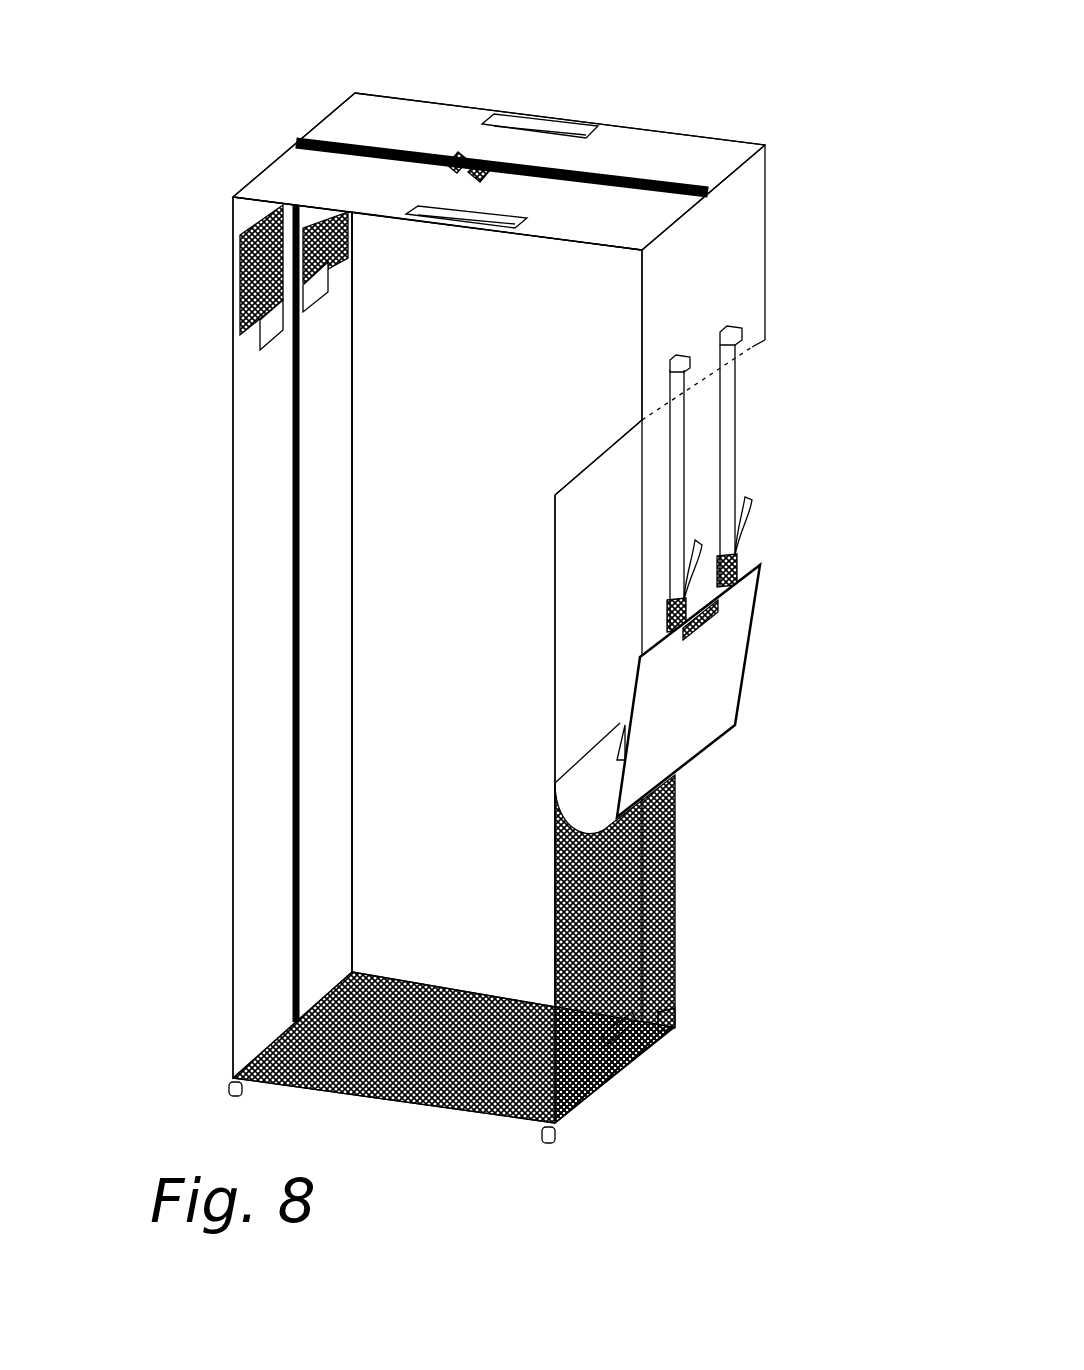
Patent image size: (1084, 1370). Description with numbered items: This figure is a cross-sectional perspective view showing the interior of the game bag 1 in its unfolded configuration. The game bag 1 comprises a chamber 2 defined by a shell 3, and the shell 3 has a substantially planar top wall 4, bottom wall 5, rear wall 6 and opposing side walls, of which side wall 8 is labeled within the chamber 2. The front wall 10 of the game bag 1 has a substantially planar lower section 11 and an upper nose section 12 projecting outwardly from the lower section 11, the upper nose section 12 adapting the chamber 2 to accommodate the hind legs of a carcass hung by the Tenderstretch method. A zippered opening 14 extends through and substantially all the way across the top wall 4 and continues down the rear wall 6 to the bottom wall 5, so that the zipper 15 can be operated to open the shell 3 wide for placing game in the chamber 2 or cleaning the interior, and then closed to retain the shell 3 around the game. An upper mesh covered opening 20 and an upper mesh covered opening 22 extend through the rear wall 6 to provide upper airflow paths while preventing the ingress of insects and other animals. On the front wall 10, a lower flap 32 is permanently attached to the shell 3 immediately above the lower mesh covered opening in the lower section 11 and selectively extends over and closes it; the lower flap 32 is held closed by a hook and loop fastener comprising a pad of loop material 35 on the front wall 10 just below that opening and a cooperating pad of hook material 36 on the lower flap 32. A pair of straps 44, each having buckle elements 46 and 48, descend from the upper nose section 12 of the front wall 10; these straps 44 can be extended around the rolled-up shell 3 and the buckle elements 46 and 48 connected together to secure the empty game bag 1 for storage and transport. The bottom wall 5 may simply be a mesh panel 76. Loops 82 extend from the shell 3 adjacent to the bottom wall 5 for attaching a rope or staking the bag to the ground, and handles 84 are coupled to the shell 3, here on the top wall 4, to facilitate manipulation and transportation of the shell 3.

The game bag 1 is at (204, 175).
The chamber 2 is at (437, 749).
The shell 3 is at (205, 497).
The top wall 4 is at (628, 156).
The bottom wall 5 is at (430, 1117).
The rear wall 6 is at (258, 548).
The side wall 8 is at (437, 602).
The front wall 10 is at (797, 256).
The lower section 11 is at (595, 590).
The upper nose section 12 is at (742, 238).
The zippered opening 14 is at (408, 157).
The zipper 15 is at (478, 165).
The upper mesh covered opening 20 is at (328, 218).
The upper mesh covered opening 22 is at (242, 268).
The lower flap 32 is at (715, 705).
The pad of loop material 35 is at (625, 1027).
The pad of hook material 36 is at (712, 618).
The straps 44 is at (742, 446).
The buckle element 46 is at (688, 356).
The buckle element 48 is at (732, 569).
The mesh panel 76 is at (470, 1005).
The loops 82 is at (232, 1090).
The handles 84 is at (536, 120).